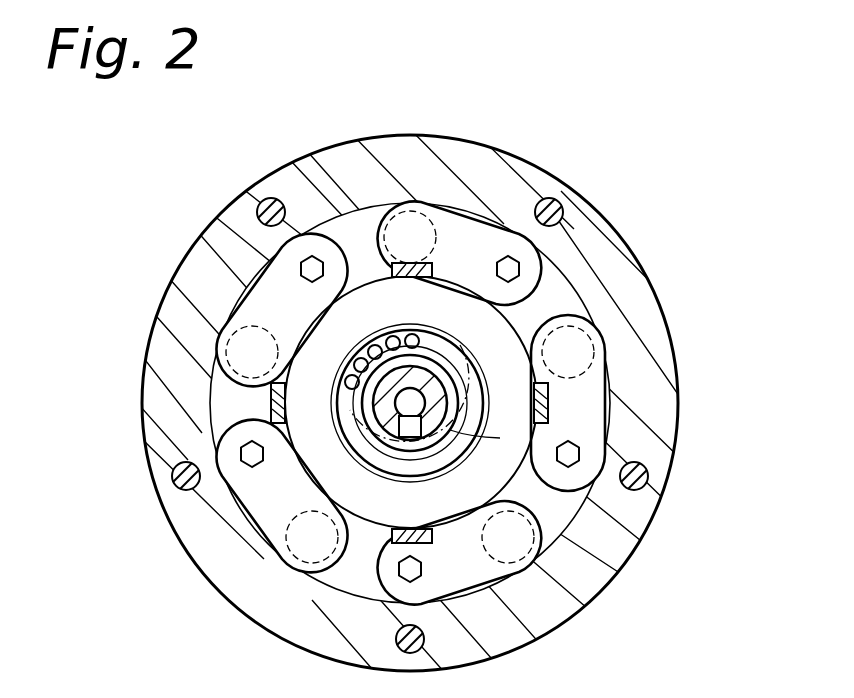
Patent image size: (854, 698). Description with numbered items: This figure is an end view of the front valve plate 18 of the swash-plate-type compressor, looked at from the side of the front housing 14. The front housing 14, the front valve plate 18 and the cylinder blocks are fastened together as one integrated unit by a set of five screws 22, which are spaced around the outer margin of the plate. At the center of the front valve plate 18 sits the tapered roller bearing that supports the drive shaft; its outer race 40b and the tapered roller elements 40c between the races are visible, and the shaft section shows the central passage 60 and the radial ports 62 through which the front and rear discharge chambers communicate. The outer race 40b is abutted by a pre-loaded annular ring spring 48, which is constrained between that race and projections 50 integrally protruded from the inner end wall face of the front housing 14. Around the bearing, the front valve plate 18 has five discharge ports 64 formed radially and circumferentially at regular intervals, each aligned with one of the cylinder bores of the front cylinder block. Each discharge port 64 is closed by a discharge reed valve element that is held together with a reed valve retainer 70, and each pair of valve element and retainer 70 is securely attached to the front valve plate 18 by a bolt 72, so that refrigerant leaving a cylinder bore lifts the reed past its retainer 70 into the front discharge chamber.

The front housing 14 is at (622, 220).
The front valve plate 18 is at (563, 297).
The screws 22 is at (258, 203).
The outer race 40b is at (353, 450).
The tapered roller elements 40c is at (350, 373).
The annular ring spring 48 is at (568, 500).
The projections 50 is at (406, 278).
The central passage 60 is at (440, 370).
The radial ports 62 is at (417, 433).
The discharge ports 64 is at (425, 217).
The reed valve retainers 70 is at (450, 205).
The bolts 72 is at (318, 258).